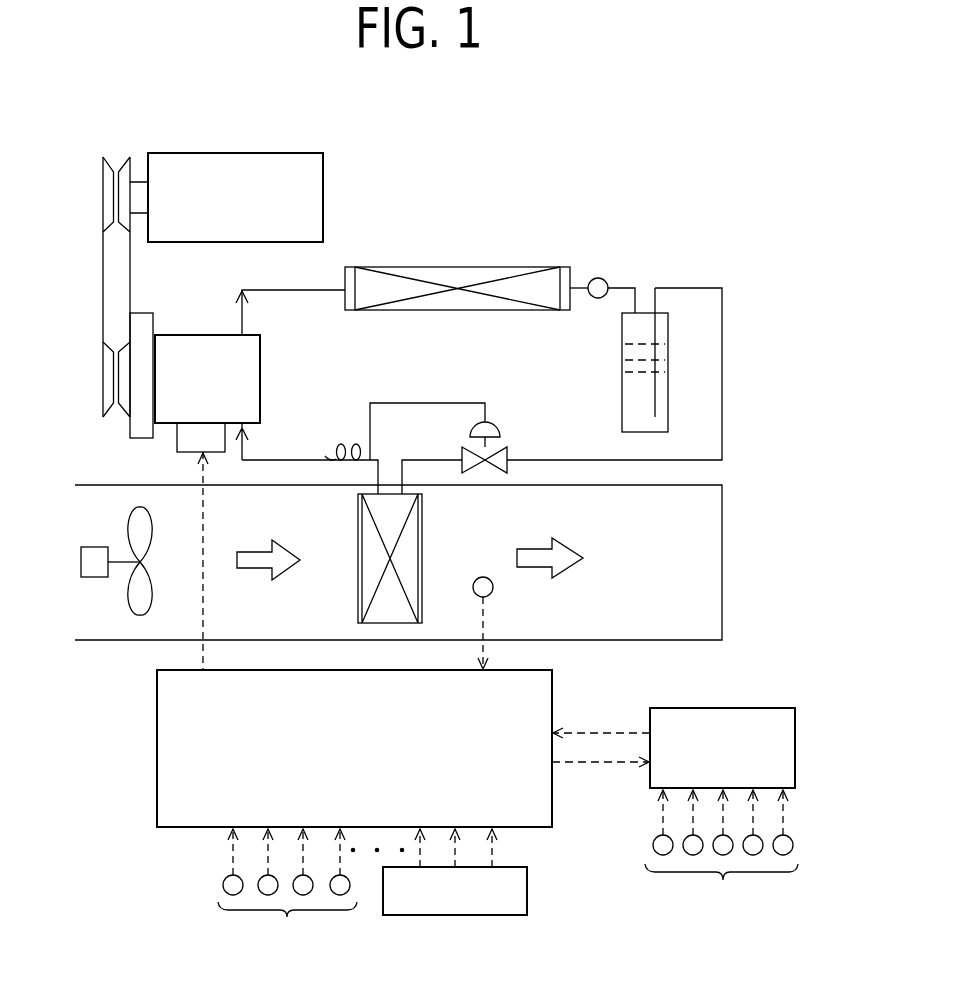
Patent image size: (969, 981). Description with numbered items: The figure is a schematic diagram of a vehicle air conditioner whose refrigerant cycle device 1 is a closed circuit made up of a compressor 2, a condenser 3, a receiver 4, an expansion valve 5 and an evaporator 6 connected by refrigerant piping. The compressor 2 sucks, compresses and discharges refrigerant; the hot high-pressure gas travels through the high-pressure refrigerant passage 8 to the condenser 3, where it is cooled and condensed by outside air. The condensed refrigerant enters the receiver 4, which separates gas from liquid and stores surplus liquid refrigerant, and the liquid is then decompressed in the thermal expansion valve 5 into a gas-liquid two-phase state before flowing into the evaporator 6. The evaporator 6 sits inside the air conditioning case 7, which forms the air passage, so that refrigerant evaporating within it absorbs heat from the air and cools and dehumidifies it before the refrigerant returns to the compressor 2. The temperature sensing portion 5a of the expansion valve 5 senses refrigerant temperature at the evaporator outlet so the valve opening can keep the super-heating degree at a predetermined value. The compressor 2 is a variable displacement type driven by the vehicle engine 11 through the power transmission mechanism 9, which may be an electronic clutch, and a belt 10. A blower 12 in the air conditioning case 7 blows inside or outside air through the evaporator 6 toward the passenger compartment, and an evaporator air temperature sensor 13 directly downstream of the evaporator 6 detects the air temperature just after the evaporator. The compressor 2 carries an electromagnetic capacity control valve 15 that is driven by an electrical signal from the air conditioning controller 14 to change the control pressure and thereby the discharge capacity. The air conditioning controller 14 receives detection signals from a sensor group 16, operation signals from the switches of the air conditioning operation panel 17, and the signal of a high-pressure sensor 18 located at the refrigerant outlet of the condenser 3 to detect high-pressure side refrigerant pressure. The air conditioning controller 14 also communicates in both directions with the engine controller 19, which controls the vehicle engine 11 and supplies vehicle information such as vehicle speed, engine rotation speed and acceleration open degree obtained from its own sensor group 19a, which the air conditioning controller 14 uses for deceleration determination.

The refrigerant cycle device 1 is at (657, 284).
The compressor 2 is at (260, 358).
The condenser 3 is at (458, 267).
The receiver 4 is at (630, 395).
The expansion valve 5 is at (507, 455).
The temperature sensing portion 5a is at (338, 445).
The evaporator 6 is at (358, 520).
The air conditioning case 7 is at (95, 641).
The high-pressure refrigerant passage 8 is at (290, 287).
The power transmission mechanism 9 is at (133, 432).
The belt 10 is at (113, 293).
The vehicle engine 11 is at (323, 170).
The blower 12 is at (136, 512).
The evaporator air temperature sensor 13 is at (483, 577).
The air conditioning controller 14 is at (157, 800).
The electromagnetic capacity control valve 15 is at (185, 448).
The sensor group 16 is at (311, 890).
The air conditioning operation panel 17 is at (527, 888).
The high-pressure sensor 18 is at (598, 277).
The engine controller 19 is at (795, 748).
The sensor group 19a is at (721, 853).